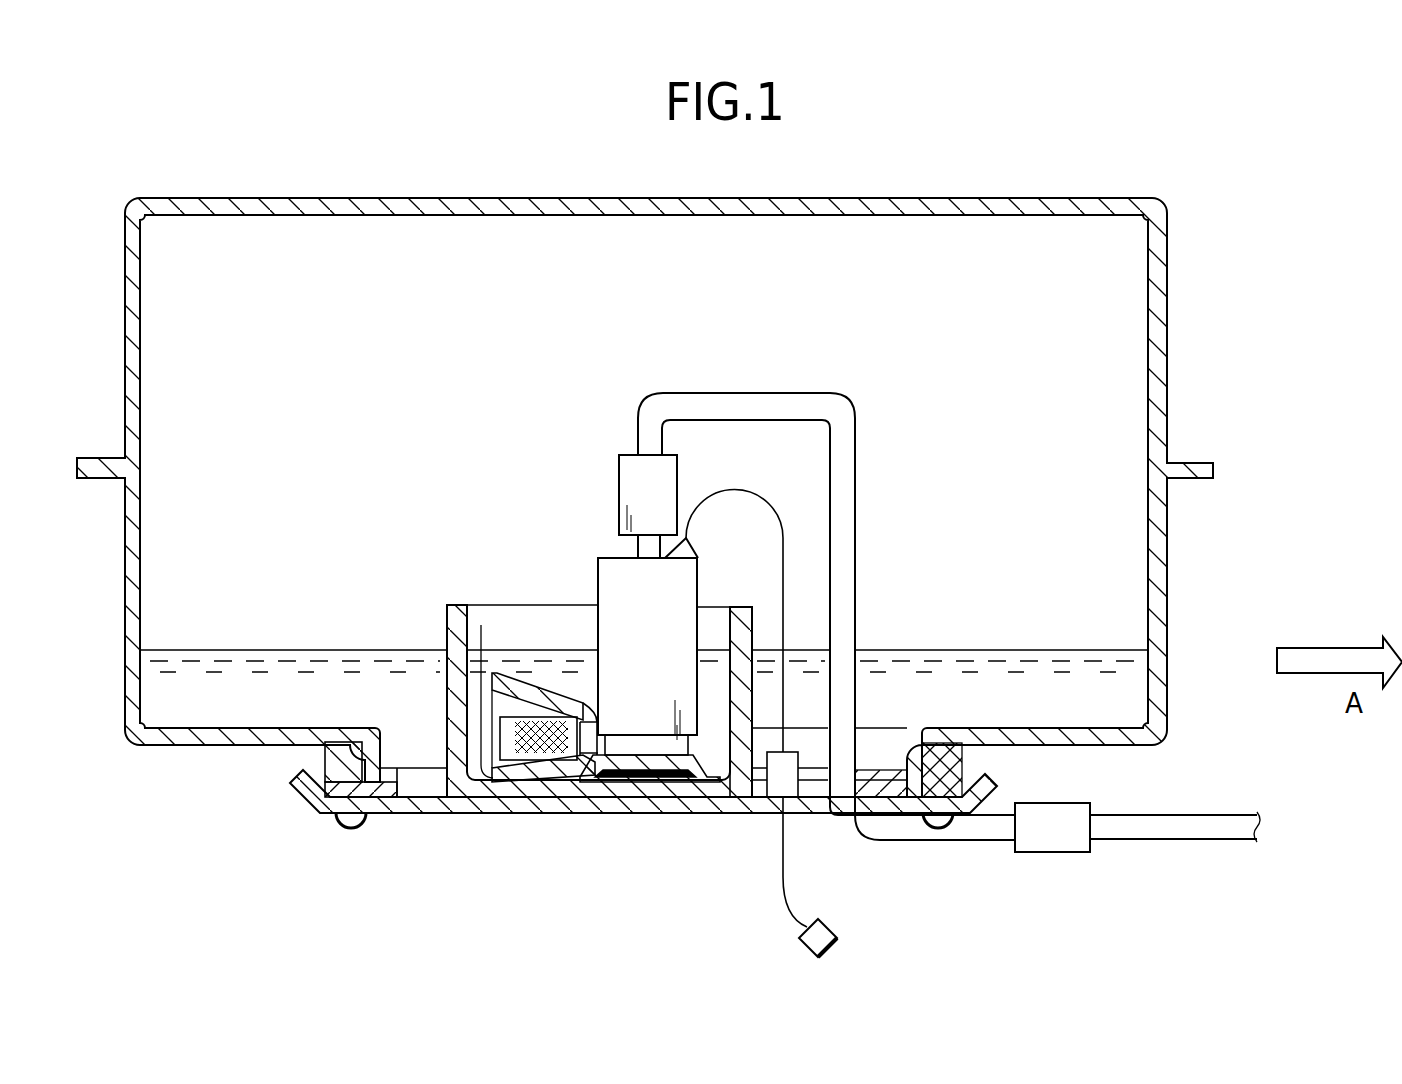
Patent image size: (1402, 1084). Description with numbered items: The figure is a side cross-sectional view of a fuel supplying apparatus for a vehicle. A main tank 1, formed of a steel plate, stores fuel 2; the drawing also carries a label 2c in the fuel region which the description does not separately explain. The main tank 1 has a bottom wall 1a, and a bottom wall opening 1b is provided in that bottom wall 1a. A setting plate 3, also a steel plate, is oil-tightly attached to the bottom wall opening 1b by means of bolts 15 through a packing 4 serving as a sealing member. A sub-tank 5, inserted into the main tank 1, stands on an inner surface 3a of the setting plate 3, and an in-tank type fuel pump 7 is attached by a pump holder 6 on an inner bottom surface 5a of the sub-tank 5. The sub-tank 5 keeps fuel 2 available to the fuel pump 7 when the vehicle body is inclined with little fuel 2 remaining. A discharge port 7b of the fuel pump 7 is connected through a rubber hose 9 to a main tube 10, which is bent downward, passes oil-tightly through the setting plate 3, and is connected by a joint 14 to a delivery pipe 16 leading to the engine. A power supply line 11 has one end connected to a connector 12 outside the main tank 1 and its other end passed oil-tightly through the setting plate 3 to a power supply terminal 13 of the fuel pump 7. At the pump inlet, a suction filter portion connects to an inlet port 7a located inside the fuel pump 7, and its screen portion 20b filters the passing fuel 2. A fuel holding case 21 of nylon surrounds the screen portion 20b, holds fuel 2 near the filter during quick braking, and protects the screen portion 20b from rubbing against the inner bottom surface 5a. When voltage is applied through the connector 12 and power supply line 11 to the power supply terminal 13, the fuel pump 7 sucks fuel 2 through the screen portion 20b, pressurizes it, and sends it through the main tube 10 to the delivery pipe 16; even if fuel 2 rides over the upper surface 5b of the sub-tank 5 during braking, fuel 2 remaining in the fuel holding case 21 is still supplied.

The main tank 1 is at (1168, 238).
The bottom wall 1a is at (895, 768).
The bottom wall opening 1b is at (870, 780).
The fuel 2 is at (1025, 650).
The fuel in filter case 2c is at (523, 782).
The setting plate 3 is at (465, 804).
The inner surface 3a is at (423, 797).
The packing 4 is at (384, 797).
The sub-tank 5 is at (447, 607).
The inner bottom surface 5a is at (482, 665).
The upper surface 5b is at (716, 616).
The pump holder 6 is at (640, 770).
The fuel pump 7 is at (598, 575).
The inlet port 7a is at (672, 742).
The discharge port 7b is at (638, 545).
The rubber hose 9 is at (619, 473).
The main tube 10 is at (638, 420).
The power supply line 11 is at (785, 868).
The connector 12 is at (836, 928).
The power supply terminal 13 is at (698, 545).
The joint 14 is at (1050, 843).
The bolts 15 is at (349, 829).
The delivery pipe 16 is at (1167, 832).
The screen portion 20b is at (548, 760).
The fuel holding case 21 is at (530, 690).